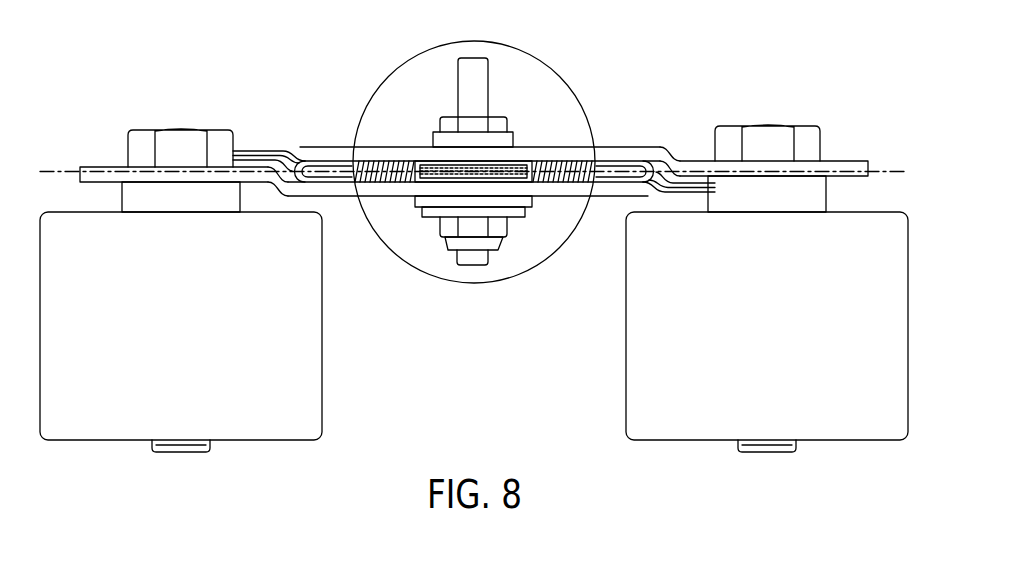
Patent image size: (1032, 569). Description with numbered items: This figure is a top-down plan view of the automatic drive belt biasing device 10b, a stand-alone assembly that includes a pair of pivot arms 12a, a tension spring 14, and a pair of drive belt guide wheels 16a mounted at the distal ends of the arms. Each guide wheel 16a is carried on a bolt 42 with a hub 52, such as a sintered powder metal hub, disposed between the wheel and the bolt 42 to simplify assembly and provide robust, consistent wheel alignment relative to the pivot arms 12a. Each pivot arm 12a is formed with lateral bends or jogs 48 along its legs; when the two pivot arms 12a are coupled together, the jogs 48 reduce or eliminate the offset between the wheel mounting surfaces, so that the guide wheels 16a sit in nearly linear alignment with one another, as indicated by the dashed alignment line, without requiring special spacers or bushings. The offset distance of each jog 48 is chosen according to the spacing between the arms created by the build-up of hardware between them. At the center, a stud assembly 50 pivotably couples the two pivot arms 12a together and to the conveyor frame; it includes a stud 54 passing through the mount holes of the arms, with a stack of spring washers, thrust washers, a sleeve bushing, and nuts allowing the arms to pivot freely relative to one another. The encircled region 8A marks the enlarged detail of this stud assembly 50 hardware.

The automatic drive belt biasing device 10b is at (778, 66).
The pivot arm 12a is at (318, 150).
The tension spring 14 is at (378, 185).
The guide wheel 16a is at (305, 383).
The bolt 42 is at (155, 145).
The jog 48 is at (297, 149).
The stud assembly 50 is at (527, 239).
The hub 52 is at (133, 186).
The stud 54 is at (460, 96).
The detail view 8A is at (532, 60).